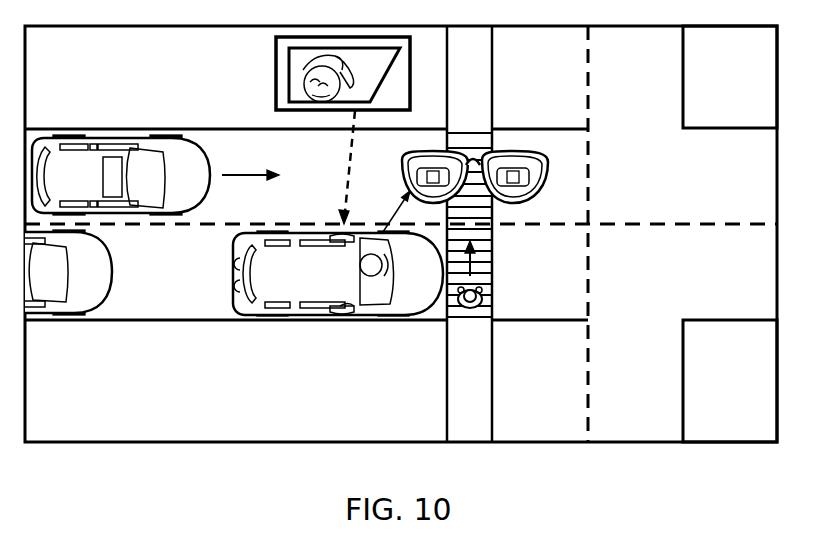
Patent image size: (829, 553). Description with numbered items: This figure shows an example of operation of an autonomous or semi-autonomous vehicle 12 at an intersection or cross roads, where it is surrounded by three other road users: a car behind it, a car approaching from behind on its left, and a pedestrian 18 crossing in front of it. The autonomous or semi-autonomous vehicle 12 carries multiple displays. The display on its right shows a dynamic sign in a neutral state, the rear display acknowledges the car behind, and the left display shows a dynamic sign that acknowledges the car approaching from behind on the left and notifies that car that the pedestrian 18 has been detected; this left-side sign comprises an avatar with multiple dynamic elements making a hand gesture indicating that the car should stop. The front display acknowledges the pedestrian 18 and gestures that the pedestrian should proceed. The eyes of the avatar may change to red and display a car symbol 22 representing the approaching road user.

The autonomous or semi-autonomous vehicle 12 is at (302, 318).
The pedestrian 18 is at (486, 298).
The car symbol 22 is at (541, 186).